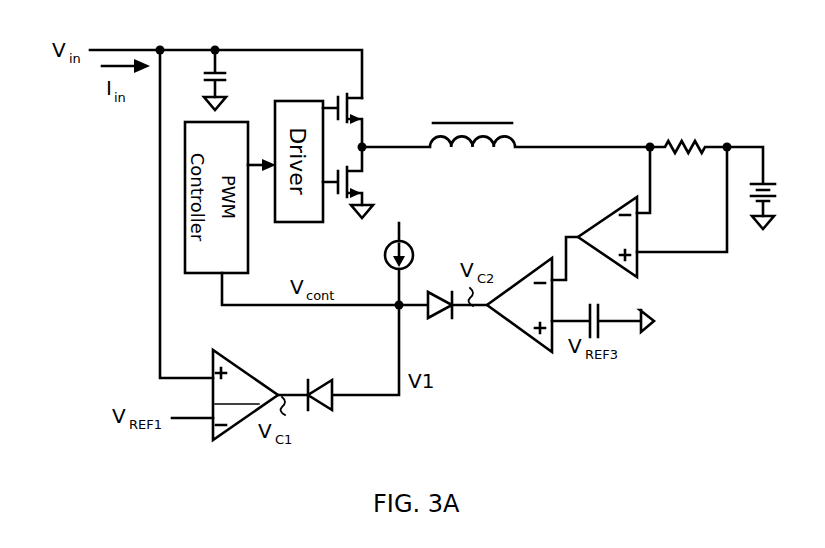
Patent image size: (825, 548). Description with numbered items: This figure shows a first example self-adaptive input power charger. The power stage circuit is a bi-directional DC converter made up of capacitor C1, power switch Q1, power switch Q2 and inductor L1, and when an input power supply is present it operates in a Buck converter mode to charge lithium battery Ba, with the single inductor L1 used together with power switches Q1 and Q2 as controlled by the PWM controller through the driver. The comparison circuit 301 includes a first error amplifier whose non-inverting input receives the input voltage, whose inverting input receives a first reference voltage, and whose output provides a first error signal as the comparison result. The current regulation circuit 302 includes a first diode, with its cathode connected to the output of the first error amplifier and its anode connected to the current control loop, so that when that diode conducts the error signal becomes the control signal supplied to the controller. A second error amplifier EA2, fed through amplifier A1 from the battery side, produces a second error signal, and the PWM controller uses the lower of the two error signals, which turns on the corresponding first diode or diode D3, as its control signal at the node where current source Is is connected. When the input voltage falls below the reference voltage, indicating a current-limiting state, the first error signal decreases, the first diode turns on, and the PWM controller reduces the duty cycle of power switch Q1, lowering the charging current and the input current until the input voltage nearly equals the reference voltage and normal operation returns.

The comparison circuit 301 is at (224, 358).
The current regulation circuit 302 is at (313, 384).
The capacitor C1 is at (230, 80).
The power switch Q1 is at (359, 120).
The power switch Q2 is at (359, 182).
The inductor L1 is at (506, 121).
The lithium battery Ba is at (778, 205).
The amplifier A1 is at (626, 246).
The error amplifier EA2 is at (547, 312).
The current source Is is at (407, 264).
The diode D3 is at (443, 322).